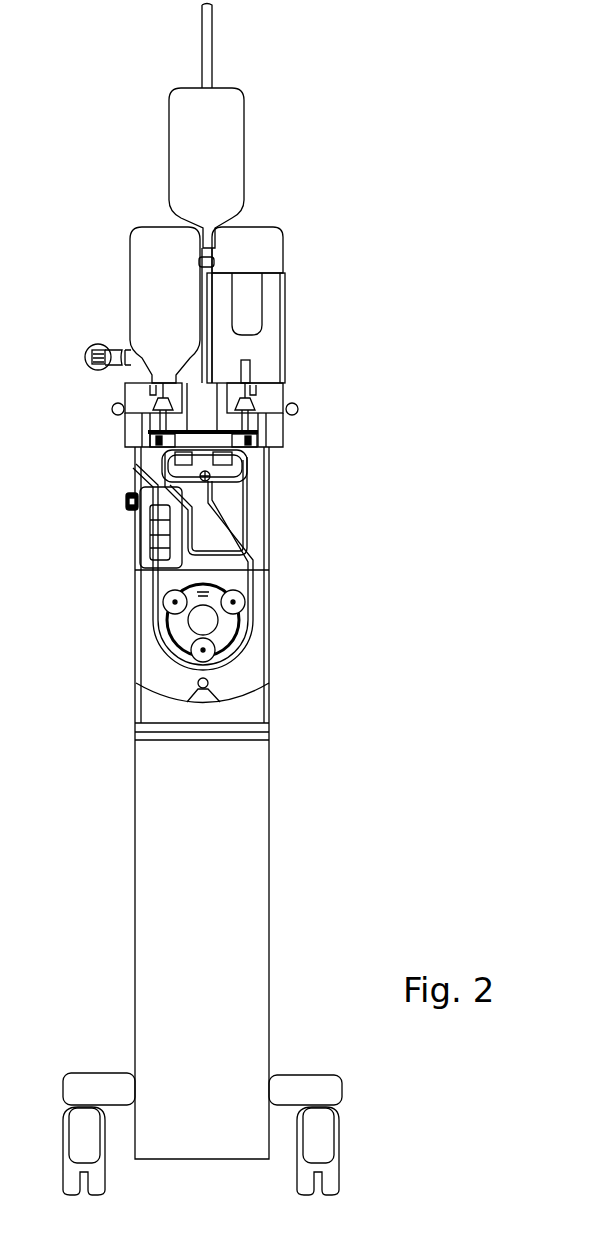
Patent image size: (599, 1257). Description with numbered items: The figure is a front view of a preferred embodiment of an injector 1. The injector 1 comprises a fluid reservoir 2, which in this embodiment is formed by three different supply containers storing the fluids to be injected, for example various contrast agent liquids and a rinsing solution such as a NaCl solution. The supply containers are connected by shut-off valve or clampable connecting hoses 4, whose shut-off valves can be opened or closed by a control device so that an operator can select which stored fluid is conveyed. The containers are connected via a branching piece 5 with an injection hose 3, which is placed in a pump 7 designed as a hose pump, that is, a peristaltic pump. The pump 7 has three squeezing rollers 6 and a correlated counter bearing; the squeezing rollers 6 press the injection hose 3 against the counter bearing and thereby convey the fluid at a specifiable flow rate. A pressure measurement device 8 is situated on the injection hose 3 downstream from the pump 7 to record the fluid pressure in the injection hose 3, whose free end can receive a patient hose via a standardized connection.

The injector 1 is at (122, 822).
The fluid reservoir 2 is at (260, 243).
The injection hose 3 is at (243, 567).
The connecting hoses 4 is at (232, 452).
The branching piece 5 is at (209, 478).
The squeezing rollers 6 is at (236, 601).
The pump 7 is at (230, 630).
The pressure measurement device 8 is at (143, 522).